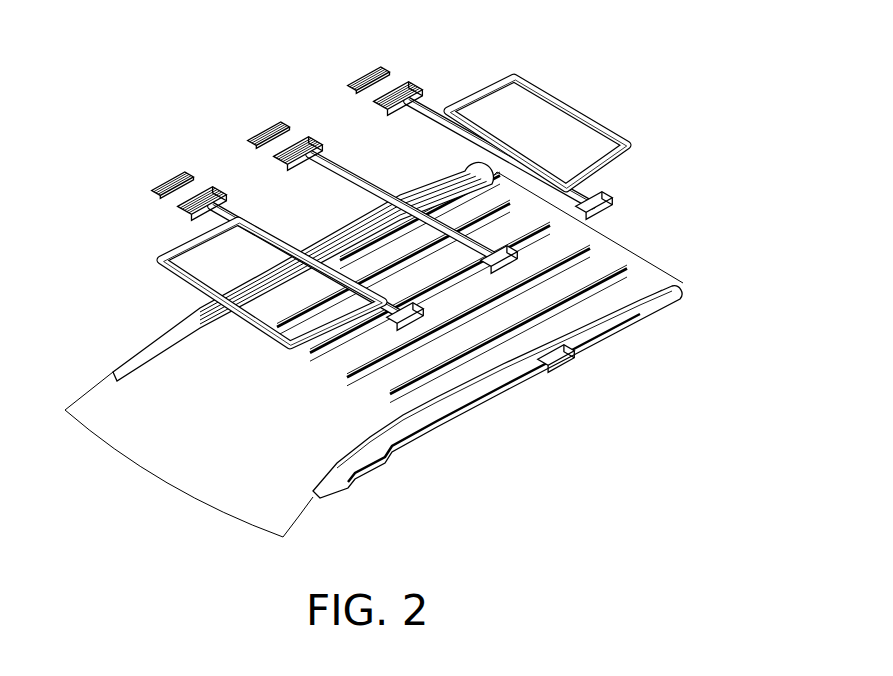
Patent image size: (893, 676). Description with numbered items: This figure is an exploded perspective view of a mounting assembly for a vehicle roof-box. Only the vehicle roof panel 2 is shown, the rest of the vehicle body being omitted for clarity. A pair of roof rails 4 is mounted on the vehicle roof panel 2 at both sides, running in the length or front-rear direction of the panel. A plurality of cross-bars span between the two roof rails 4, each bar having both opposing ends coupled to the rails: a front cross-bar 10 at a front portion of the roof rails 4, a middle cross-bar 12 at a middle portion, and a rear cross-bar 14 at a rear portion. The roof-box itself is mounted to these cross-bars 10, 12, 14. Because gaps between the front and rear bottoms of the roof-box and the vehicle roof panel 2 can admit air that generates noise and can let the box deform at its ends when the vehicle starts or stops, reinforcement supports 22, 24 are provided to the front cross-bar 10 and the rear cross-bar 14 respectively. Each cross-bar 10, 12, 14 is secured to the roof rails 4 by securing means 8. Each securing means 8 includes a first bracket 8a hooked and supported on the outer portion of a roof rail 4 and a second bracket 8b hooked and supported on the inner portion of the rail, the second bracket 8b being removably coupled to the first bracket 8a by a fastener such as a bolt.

The vehicle roof panel 2 is at (214, 494).
The roof rail 4 is at (143, 349).
The securing means 8 is at (364, 61).
The first bracket 8a is at (185, 177).
The second bracket 8b is at (207, 191).
The front cross-bar 10 is at (257, 226).
The middle cross-bar 12 is at (349, 173).
The rear cross-bar 14 is at (453, 109).
The reinforcement support 22 is at (149, 255).
The reinforcement support 24 is at (572, 96).